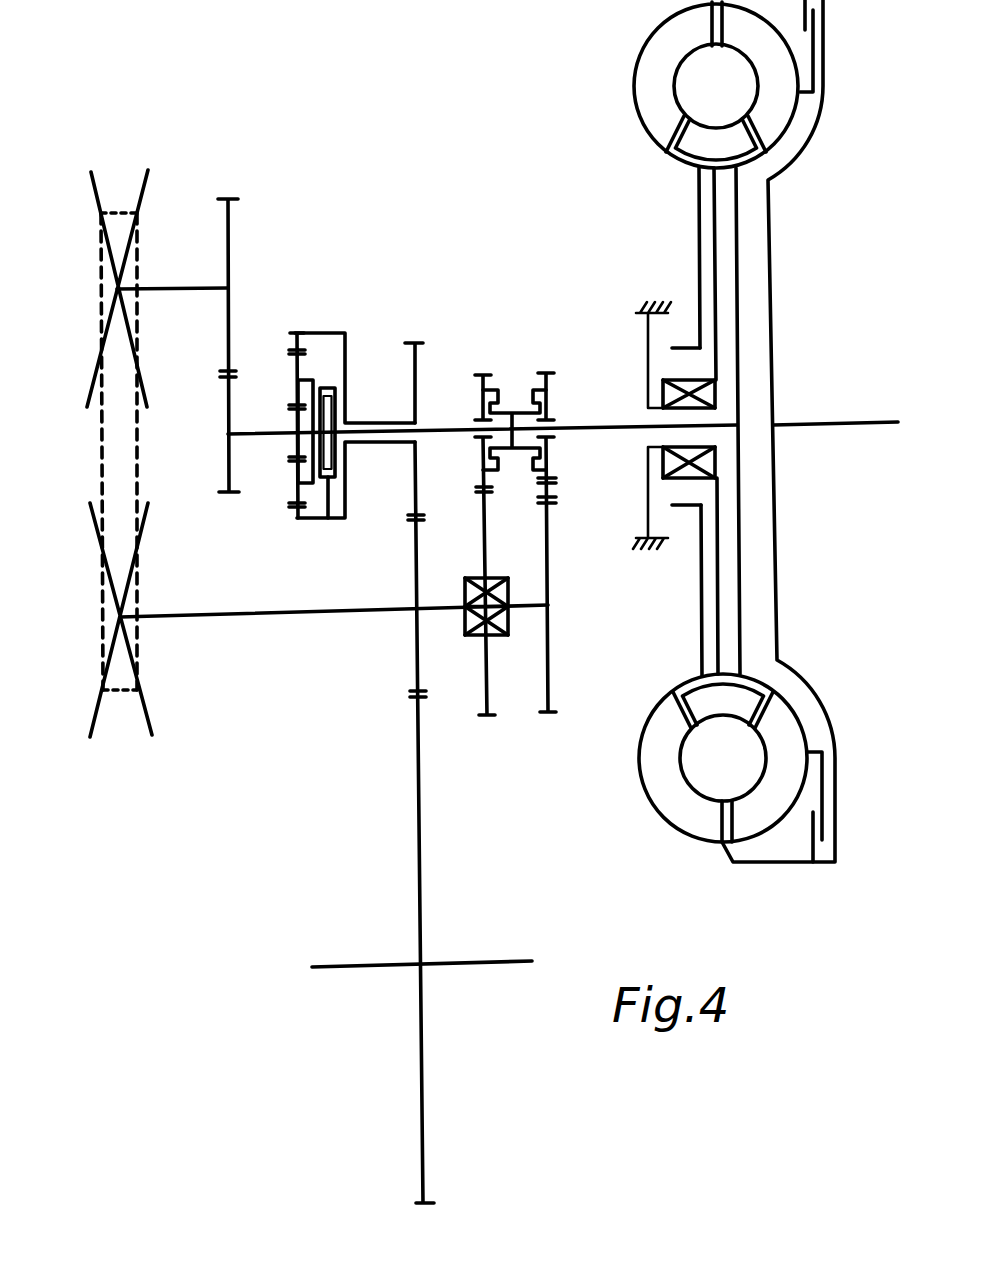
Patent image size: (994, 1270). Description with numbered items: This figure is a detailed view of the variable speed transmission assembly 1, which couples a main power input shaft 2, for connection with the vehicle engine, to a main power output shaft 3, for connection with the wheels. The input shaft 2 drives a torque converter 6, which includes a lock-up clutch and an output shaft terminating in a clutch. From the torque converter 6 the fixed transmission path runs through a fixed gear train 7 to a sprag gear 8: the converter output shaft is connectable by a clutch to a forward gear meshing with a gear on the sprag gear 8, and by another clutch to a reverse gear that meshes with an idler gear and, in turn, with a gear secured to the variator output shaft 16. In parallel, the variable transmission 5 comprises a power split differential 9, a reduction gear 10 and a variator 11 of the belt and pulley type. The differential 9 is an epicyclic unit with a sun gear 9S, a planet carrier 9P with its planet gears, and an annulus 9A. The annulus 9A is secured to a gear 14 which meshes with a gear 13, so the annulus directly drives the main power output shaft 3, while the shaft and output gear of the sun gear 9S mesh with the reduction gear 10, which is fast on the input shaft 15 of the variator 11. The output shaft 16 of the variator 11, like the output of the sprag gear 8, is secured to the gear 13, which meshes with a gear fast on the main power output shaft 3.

The variable speed transmission assembly 1 is at (357, 90).
The main power input shaft 2 is at (830, 428).
The main power output shaft 3 is at (362, 968).
The variable transmission 5 is at (272, 230).
The torque converter 6 is at (771, 431).
The fixed gear train 7 is at (513, 382).
The sprag gear 8 is at (465, 642).
The power split differential 9 is at (327, 415).
The annulus 9A is at (345, 332).
The planet carrier 9P is at (296, 400).
The sun gear 9S is at (294, 442).
The reduction gear 10 is at (225, 335).
The variator 11 is at (82, 720).
The gear 13 is at (415, 665).
The gear 14 is at (412, 493).
The input shaft 15 is at (185, 286).
The output shaft 16 is at (240, 617).